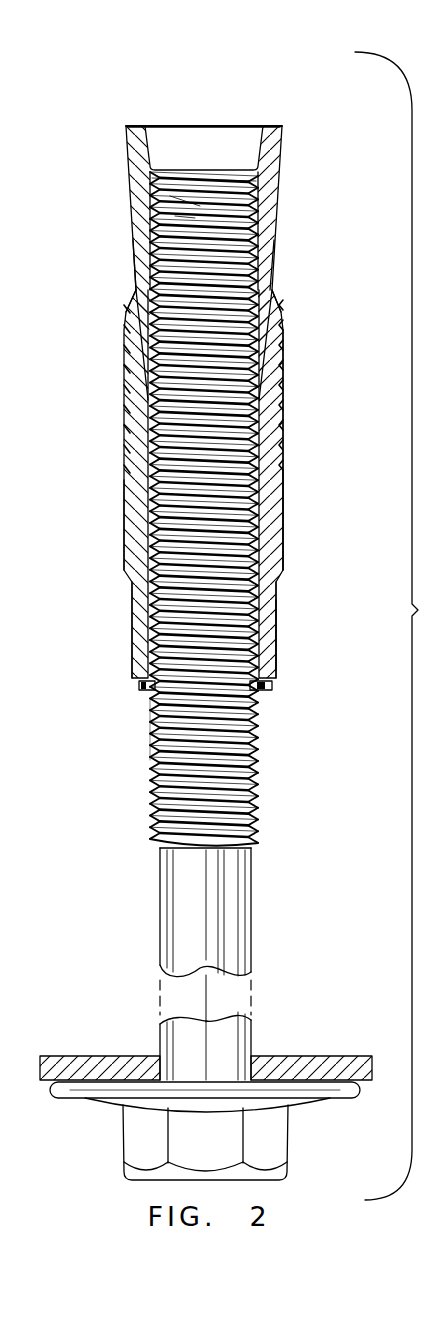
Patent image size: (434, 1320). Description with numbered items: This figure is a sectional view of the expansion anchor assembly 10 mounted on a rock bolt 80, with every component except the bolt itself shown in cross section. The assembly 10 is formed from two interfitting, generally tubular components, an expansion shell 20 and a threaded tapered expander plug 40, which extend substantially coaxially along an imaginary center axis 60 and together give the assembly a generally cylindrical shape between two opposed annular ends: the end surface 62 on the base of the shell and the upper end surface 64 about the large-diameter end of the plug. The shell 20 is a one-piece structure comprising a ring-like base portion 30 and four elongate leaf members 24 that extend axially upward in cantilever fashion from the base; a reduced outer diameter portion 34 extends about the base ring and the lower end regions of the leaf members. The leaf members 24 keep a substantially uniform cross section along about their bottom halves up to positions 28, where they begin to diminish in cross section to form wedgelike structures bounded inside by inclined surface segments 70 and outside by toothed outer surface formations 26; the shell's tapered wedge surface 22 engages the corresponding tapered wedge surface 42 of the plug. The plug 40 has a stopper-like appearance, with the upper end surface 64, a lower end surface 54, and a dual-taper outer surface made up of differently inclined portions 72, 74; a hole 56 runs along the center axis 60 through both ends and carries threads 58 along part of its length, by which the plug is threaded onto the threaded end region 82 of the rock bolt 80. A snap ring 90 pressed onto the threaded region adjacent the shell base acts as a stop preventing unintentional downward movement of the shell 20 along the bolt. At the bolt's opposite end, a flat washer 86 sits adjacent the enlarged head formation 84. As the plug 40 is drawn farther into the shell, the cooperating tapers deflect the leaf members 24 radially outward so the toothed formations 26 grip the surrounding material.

The expansion anchor assembly 10 is at (114, 75).
The expansion shell 20 is at (298, 460).
The tapered wedge surface of the shell 22 is at (263, 347).
The leaf members 24 is at (128, 518).
The toothed outer surface formations 26 is at (284, 400).
The positions where leaf members begin to diminish in cross section 28 is at (284, 488).
The base ring portion 30 is at (116, 641).
The reduced outer diameter portion 34 is at (277, 643).
The tapered expander plug 40 is at (296, 181).
The tapered wedge surface of the plug 42 is at (275, 253).
The lower end surface of the plug 54 is at (130, 321).
The hole in the plug 56 is at (146, 175).
The threads of the plug hole 58 is at (185, 196).
The center axis 60 is at (220, 996).
The end surface of the shell base 62 is at (266, 701).
The upper end surface of the plug 64 is at (244, 125).
The inclined surface segments of the shell 70 is at (262, 319).
The tapered outer surface portion of the plug 72 is at (136, 272).
The tapered outer surface portion of the plug 74 is at (175, 150).
The rock bolt 80 is at (270, 790).
The threads of the rock bolt 82 is at (250, 738).
The head formation of the rock bolt 84 is at (281, 1142).
The flat washer 86 is at (98, 1057).
The snap ring 90 is at (139, 702).